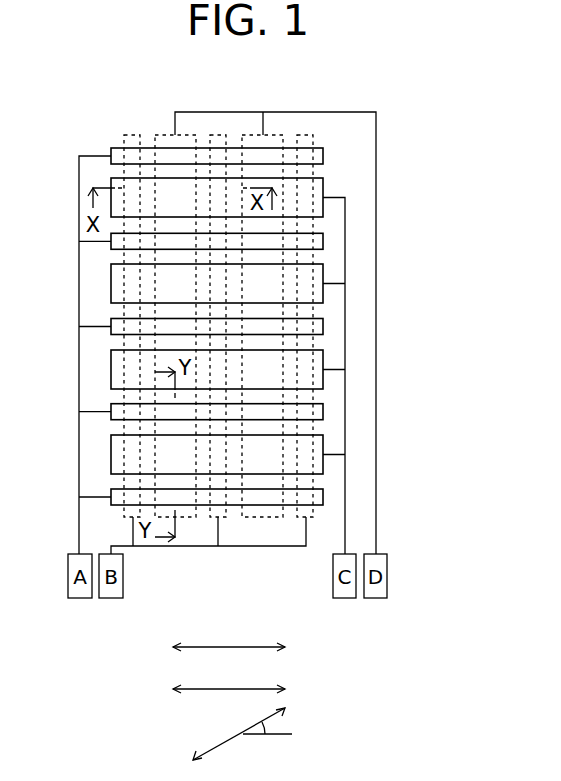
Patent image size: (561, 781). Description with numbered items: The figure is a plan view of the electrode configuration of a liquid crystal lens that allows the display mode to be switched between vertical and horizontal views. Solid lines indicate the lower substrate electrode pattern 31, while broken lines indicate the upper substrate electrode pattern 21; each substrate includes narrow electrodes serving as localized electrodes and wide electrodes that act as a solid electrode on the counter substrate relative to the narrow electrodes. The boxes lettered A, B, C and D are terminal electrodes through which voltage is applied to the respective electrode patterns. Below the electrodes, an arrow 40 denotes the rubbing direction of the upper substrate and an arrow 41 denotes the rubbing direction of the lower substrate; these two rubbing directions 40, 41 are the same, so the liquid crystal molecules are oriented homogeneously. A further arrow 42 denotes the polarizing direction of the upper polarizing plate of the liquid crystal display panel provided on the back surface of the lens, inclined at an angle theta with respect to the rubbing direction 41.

The upper substrate electrode pattern 21 is at (269, 135).
The lower substrate electrode pattern 31 is at (323, 158).
The rubbing direction of the upper substrate 40 is at (212, 647).
The rubbing direction of the lower substrate 41 is at (220, 689).
The polarizing direction of the upper polarizing plate 42 is at (223, 744).